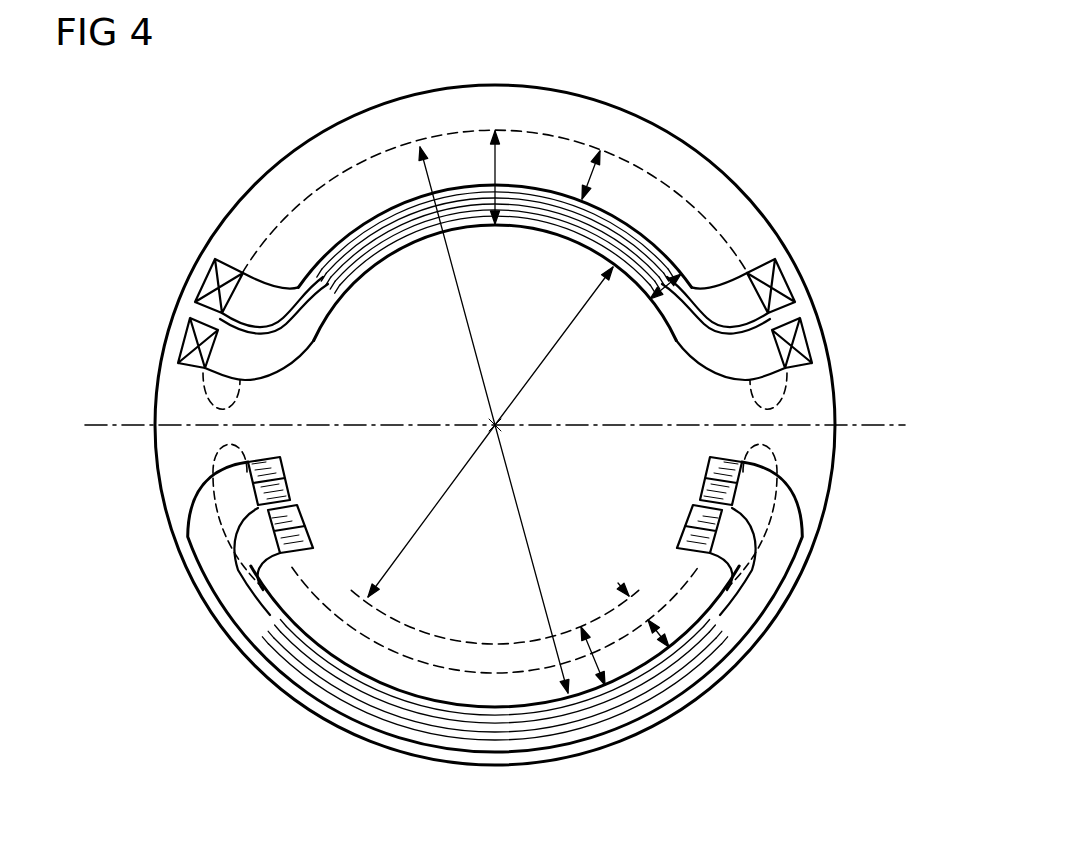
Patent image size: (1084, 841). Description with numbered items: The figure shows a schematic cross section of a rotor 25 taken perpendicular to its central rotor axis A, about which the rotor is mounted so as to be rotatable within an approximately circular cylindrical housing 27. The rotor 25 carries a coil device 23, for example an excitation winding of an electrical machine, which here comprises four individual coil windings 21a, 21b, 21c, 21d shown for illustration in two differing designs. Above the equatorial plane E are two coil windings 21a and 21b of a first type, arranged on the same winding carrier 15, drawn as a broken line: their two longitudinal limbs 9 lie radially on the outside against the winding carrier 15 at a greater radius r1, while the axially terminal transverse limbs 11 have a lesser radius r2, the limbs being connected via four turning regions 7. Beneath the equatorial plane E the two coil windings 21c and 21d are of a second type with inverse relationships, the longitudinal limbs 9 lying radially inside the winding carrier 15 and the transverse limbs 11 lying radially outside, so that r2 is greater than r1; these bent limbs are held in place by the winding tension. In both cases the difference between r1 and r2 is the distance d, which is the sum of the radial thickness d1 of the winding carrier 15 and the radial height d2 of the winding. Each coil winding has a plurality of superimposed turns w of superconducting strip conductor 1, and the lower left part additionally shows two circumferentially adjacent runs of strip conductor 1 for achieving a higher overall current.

The superconducting strip conductor 1 is at (300, 535).
The turning regions 7 is at (292, 382).
The longitudinal limbs 9 is at (205, 280).
The transverse limbs 11 is at (340, 300).
The winding carrier 15 is at (331, 178).
The coil winding 21a is at (806, 266).
The coil winding 21b is at (840, 330).
The coil winding 21c is at (696, 478).
The coil winding 21d is at (680, 518).
The coil device 23 is at (657, 228).
The rotor 25 is at (212, 162).
The housing 27 is at (831, 490).
The central rotor axis A is at (498, 427).
The equatorial plane E is at (100, 420).
The distance d is at (503, 152).
The radial thickness of the winding carrier d1 is at (590, 178).
The radial height of the winding d2 is at (665, 298).
The radius of the longitudinal limbs r1 is at (476, 355).
The radius of the transverse limbs r2 is at (561, 337).
The turns w is at (617, 710).